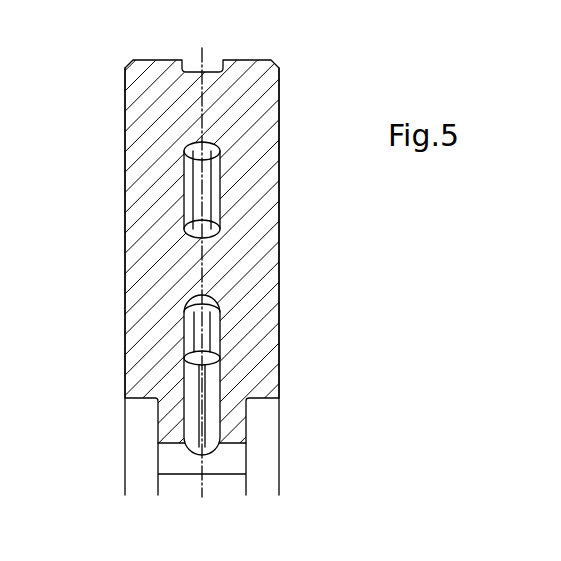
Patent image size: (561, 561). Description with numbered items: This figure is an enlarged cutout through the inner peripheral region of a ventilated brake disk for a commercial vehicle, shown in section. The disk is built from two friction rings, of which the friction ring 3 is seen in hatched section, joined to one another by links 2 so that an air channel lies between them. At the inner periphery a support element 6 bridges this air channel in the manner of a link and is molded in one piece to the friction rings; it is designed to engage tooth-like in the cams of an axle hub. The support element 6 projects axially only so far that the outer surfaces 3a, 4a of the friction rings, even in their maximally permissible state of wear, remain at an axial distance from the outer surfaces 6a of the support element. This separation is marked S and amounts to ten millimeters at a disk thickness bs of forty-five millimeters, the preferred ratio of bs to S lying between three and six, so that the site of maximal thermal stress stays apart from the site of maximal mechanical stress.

The link 2 is at (217, 102).
The friction ring 3 is at (160, 158).
The outer surface of the friction ring 3a is at (122, 252).
The outer surface of the friction ring 4a is at (283, 265).
The support element 6 is at (230, 418).
The outer surface of the support element 6a is at (152, 407).
The axial distance S is at (80, 463).
The disk thickness bs is at (279, 33).